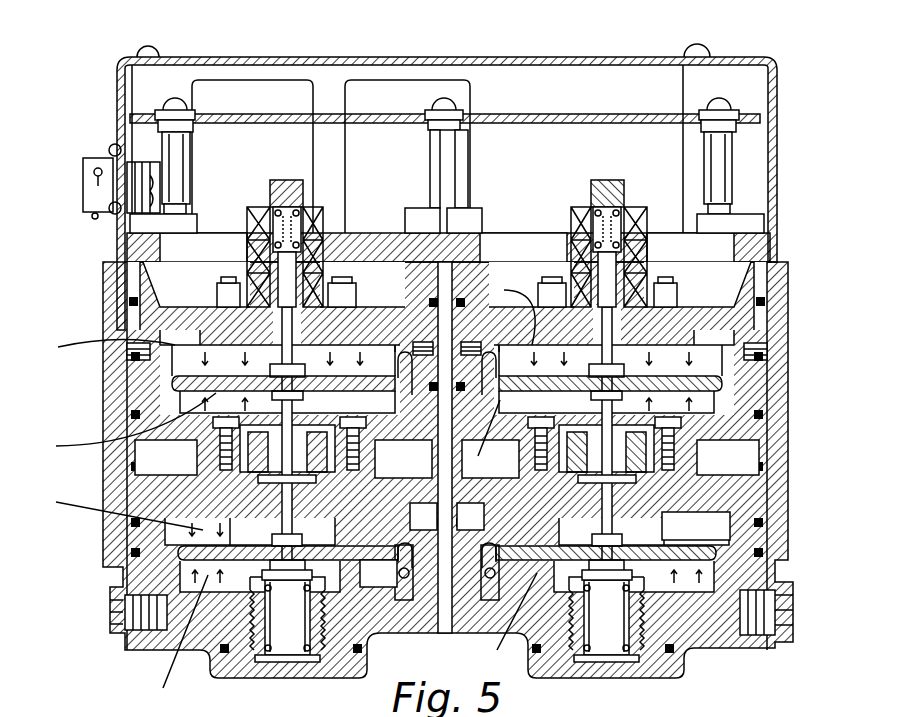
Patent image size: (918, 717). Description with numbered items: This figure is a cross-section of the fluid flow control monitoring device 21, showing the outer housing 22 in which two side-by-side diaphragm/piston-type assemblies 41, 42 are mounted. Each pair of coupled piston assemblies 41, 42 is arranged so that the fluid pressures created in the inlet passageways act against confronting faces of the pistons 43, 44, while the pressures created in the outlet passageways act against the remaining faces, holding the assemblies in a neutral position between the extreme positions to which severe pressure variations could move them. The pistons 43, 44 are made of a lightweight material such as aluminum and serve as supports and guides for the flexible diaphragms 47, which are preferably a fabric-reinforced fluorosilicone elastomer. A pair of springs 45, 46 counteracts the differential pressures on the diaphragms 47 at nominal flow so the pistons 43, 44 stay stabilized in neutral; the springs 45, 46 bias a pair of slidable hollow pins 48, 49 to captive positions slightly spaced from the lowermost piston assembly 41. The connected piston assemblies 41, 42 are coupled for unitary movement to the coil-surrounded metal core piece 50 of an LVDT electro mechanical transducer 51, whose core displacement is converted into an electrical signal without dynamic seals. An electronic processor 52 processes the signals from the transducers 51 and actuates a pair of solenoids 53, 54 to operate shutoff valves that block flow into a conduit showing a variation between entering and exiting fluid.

The fluid flow control monitoring device 21 is at (531, 55).
The outer housing 22 is at (792, 428).
The diaphragm/piston-type assembly 41 is at (718, 538).
The diaphragm/piston-type assembly 42 is at (683, 392).
The piston 43 is at (710, 538).
The piston 44 is at (632, 387).
The spring 45 is at (600, 650).
The spring 46 is at (546, 478).
The flexible diaphragm 47 is at (409, 578).
The slidable hollow pin 48 is at (632, 562).
The slidable hollow pin 49 is at (675, 530).
The metal core piece 50 is at (556, 240).
The LVDT electro mechanical transducer 51 is at (585, 205).
The electronic processor 52 is at (326, 110).
The solenoid 53 is at (402, 80).
The solenoid 54 is at (231, 80).